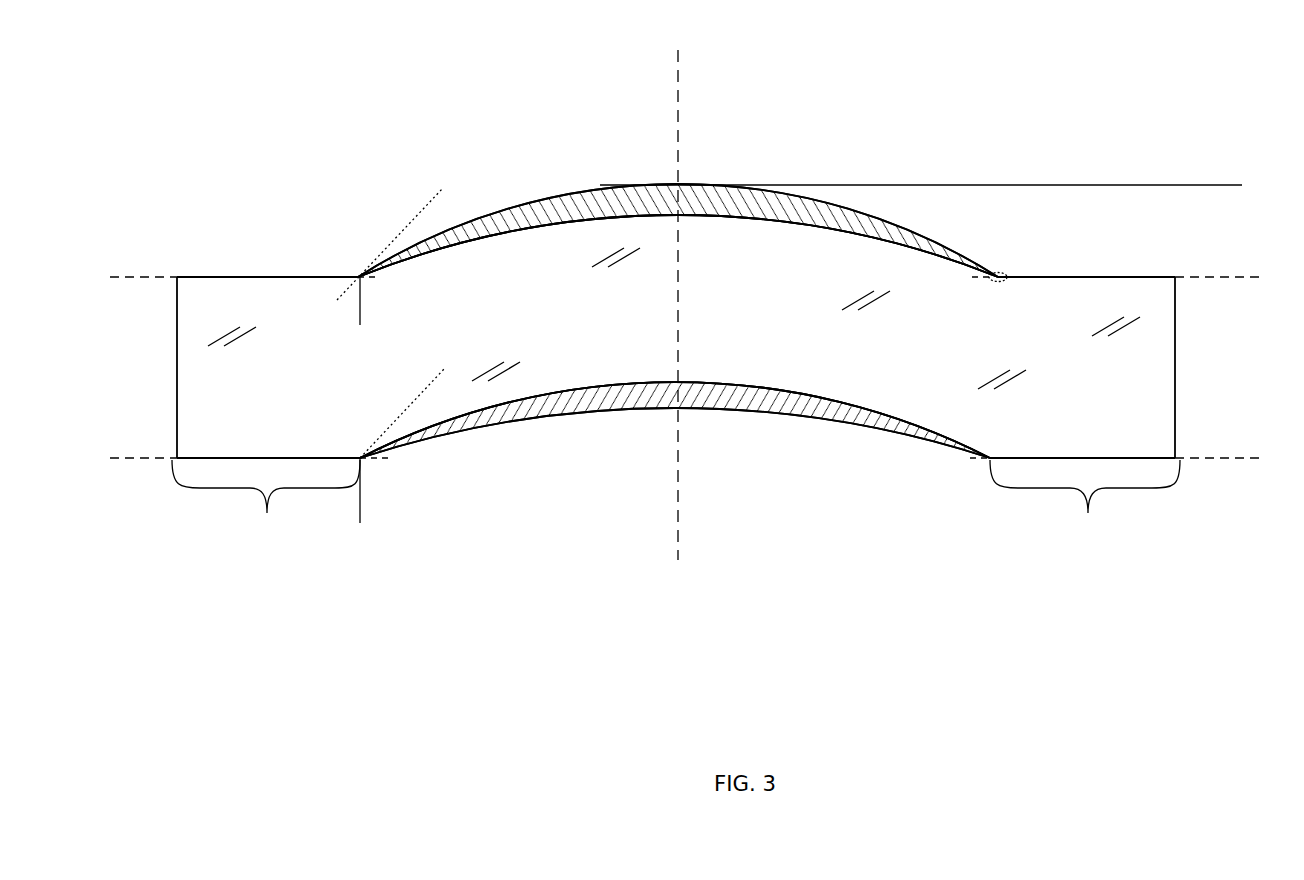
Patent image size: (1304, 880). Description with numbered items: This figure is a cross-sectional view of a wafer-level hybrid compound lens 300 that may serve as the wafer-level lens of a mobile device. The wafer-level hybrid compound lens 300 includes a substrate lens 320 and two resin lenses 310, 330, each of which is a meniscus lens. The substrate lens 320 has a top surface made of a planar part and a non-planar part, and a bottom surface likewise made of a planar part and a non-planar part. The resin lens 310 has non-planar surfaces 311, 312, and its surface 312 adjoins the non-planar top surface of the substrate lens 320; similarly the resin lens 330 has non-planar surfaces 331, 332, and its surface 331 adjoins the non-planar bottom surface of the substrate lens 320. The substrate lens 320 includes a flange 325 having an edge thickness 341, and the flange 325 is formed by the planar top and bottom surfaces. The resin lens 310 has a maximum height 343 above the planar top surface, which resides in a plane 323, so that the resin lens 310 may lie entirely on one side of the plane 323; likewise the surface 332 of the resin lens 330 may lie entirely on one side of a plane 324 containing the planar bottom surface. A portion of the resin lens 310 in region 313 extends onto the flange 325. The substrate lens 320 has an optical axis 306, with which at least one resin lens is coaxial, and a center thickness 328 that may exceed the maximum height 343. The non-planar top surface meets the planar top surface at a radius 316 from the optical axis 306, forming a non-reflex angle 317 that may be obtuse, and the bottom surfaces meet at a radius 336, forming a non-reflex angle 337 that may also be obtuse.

The wafer-level hybrid compound lens 300 is at (342, 68).
The optical axis 306 is at (678, 80).
The resin lens 310 is at (751, 211).
The non-planar surface 311 is at (583, 190).
The non-planar surface 312 is at (519, 224).
The region 313 is at (1010, 277).
The radius 316 is at (678, 300).
The non-reflex angle 317 is at (428, 199).
The substrate lens 320 is at (595, 341).
The plane 323 is at (153, 276).
The plane 324 is at (131, 461).
The flange 325 is at (676, 505).
The center thickness 328 is at (678, 217).
The resin lens 330 is at (755, 401).
The non-planar surface 331 is at (816, 399).
The non-planar surface 332 is at (885, 432).
The radius 336 is at (678, 496).
The non-reflex angle 337 is at (430, 375).
The edge thickness 341 is at (1242, 277).
The maximum height 343 is at (1242, 185).